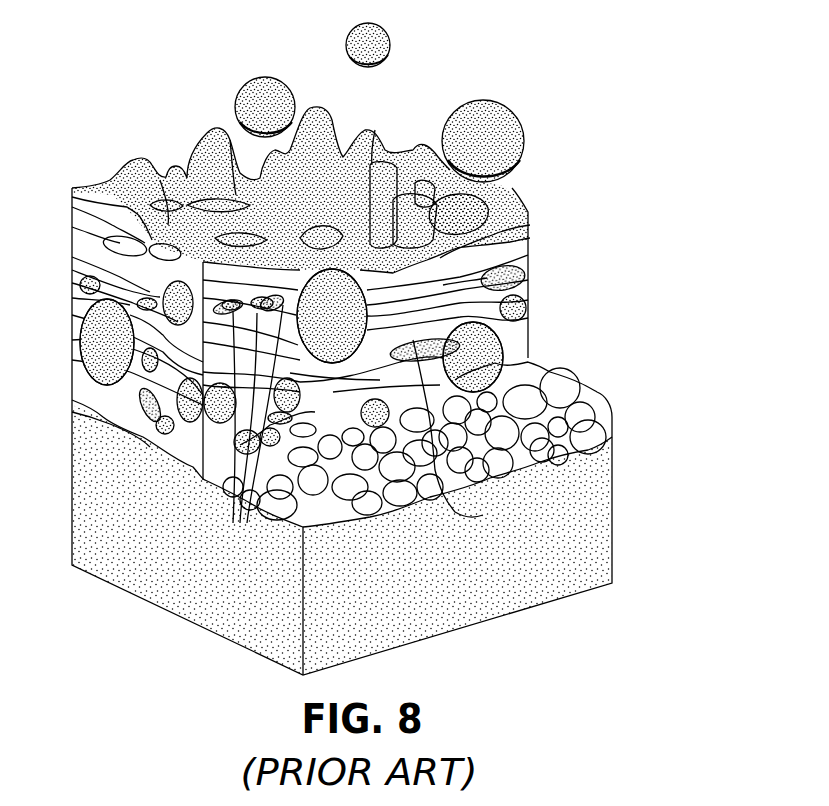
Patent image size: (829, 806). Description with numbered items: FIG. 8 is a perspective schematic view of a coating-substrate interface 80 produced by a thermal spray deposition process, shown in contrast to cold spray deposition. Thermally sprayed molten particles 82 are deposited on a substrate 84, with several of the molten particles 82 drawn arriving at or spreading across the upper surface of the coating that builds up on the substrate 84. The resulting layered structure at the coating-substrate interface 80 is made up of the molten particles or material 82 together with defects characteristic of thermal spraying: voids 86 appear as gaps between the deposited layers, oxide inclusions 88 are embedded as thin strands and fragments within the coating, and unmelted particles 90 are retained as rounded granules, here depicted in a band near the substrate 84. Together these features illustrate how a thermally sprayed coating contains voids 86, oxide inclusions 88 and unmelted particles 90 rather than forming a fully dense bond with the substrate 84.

The coating-substrate interface 80 is at (132, 102).
The molten particles 82 is at (235, 108).
The substrate 84 is at (612, 520).
The voids 86 is at (495, 268).
The oxide inclusions 88 is at (60, 497).
The unmelted particles 90 is at (527, 365).